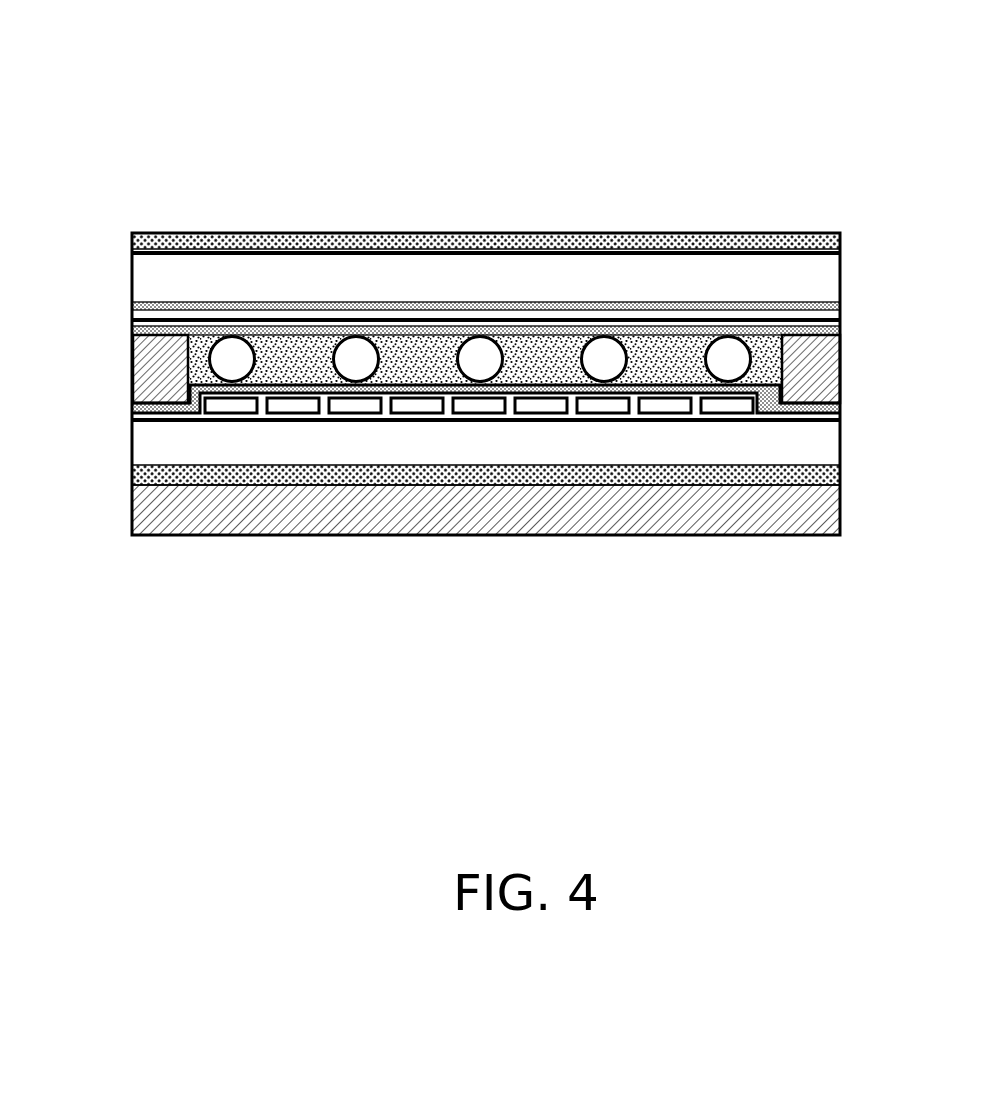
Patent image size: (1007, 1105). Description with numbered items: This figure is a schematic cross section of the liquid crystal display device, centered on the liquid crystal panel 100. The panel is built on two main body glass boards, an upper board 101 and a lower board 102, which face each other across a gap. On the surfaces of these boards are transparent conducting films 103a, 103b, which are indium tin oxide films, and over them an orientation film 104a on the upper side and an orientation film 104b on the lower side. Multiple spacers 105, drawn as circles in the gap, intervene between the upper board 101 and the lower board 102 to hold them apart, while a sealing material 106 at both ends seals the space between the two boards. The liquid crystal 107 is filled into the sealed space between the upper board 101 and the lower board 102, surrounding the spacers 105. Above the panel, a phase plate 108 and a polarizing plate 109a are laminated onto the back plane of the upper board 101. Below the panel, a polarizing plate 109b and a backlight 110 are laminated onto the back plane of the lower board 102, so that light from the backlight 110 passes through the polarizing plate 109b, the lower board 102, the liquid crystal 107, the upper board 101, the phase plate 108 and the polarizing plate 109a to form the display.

The liquid crystal panel 100 is at (447, 90).
The upper board 101 is at (845, 248).
The lower board 102 is at (845, 402).
The transparent conducting film 103a is at (290, 318).
The transparent conducting film 103b is at (602, 405).
The orientation film 104a is at (195, 333).
The orientation film 104b is at (163, 423).
The spacer 105 is at (477, 343).
The sealing material 106 is at (843, 370).
The liquid crystal 107 is at (290, 365).
The phase plate 108 is at (742, 247).
The polarizing plate 109a is at (610, 238).
The polarizing plate 109b is at (727, 473).
The backlight 110 is at (463, 522).